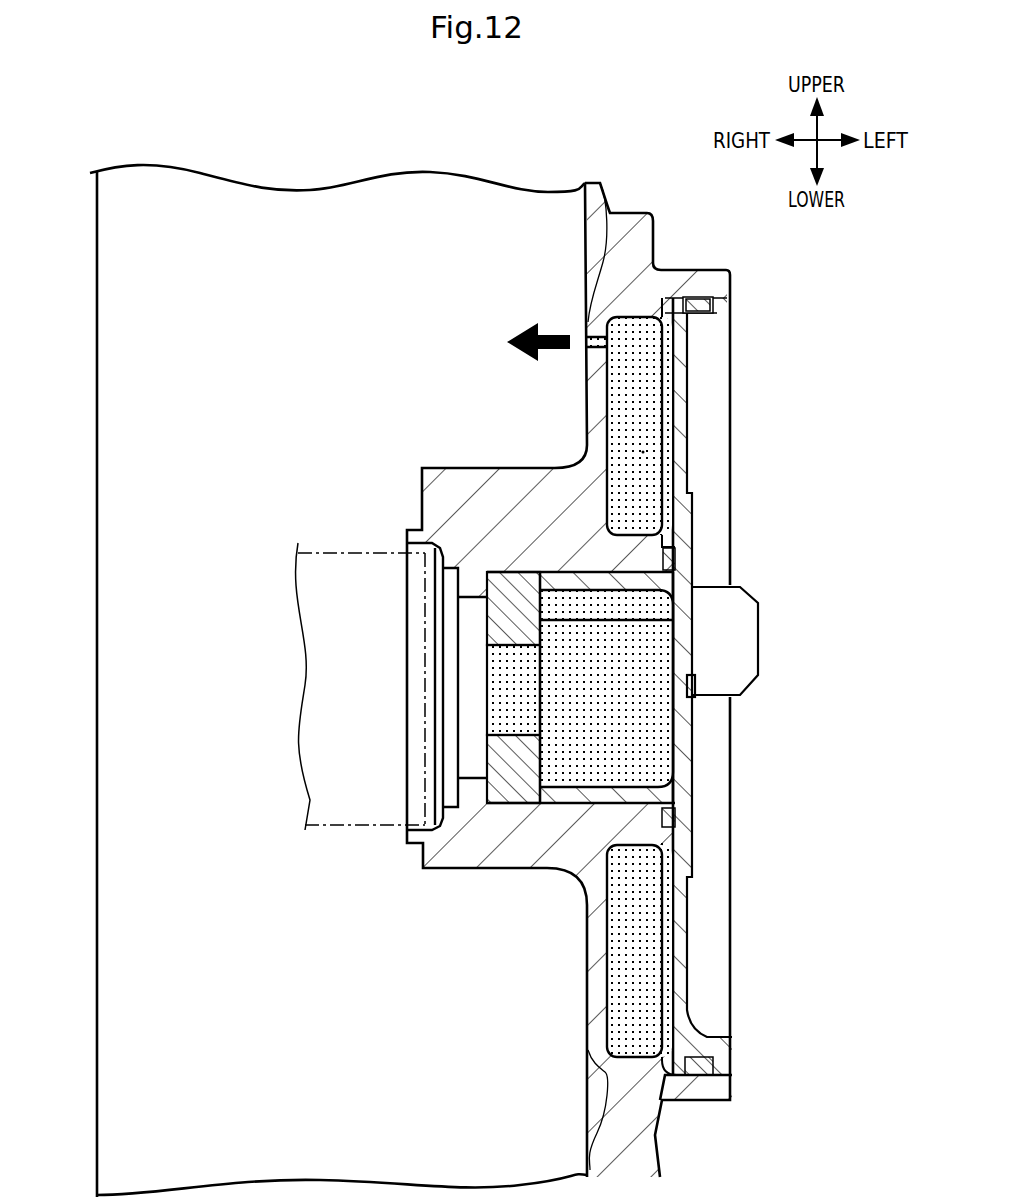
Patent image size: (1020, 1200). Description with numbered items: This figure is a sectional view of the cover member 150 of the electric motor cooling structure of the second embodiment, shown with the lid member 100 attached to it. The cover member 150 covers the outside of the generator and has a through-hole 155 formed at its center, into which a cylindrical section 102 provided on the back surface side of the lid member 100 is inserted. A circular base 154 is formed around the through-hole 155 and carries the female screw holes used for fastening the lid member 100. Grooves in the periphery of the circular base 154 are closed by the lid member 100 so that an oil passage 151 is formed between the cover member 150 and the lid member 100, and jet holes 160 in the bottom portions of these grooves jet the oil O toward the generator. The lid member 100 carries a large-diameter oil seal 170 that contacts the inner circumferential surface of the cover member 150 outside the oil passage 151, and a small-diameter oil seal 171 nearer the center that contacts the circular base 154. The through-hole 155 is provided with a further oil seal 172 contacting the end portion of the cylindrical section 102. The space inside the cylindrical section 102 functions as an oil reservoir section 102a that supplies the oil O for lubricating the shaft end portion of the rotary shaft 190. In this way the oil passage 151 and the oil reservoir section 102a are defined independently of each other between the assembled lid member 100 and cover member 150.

The lid member 100 is at (676, 415).
The cylindrical section 102 is at (631, 797).
The oil reservoir section 102a is at (639, 722).
The cover member 150 is at (95, 458).
The oil passage 151 is at (648, 378).
The circular base 154 is at (654, 540).
The through-hole 155 is at (614, 651).
The jet hole 160 is at (614, 341).
The large-diameter oil seal 170 is at (694, 296).
The small-diameter oil seal 171 is at (670, 558).
The oil seal 172 is at (659, 620).
The rotary shaft 190 is at (380, 820).
The oil O is at (645, 452).